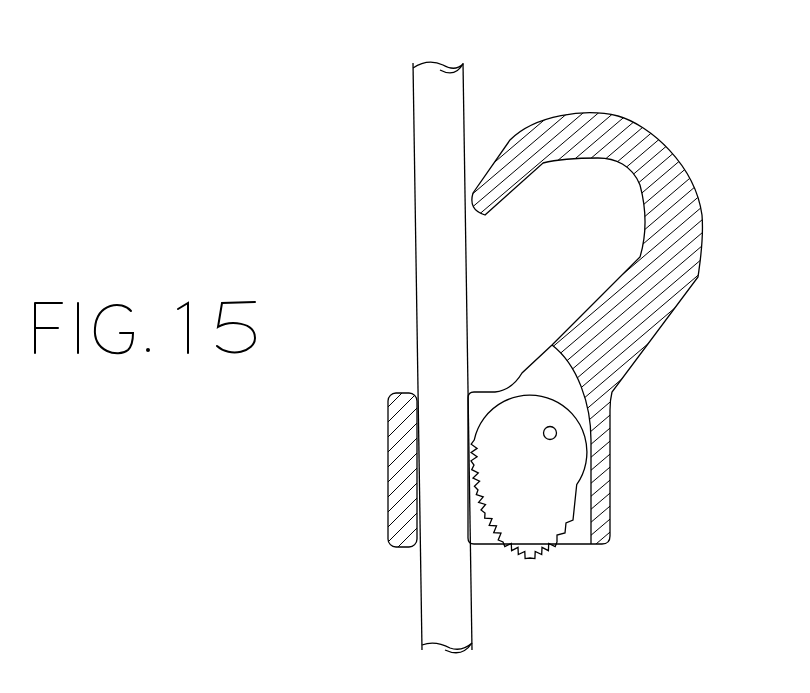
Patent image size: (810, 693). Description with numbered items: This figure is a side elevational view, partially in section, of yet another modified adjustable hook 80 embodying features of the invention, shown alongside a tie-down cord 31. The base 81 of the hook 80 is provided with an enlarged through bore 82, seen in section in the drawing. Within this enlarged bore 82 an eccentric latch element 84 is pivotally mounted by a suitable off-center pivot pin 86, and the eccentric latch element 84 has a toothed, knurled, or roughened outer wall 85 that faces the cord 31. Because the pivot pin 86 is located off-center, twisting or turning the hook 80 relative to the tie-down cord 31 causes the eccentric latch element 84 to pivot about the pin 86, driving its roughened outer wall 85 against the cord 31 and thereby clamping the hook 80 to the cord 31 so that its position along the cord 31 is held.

The adjustable hook 80 is at (602, 346).
The tie-down cord 31 is at (416, 318).
The base 81 is at (395, 494).
The enlarged through bore 82 is at (521, 382).
The eccentric latch element 84 is at (545, 493).
The toothed outer wall 85 is at (482, 513).
The off-center pivot pin 86 is at (556, 430).